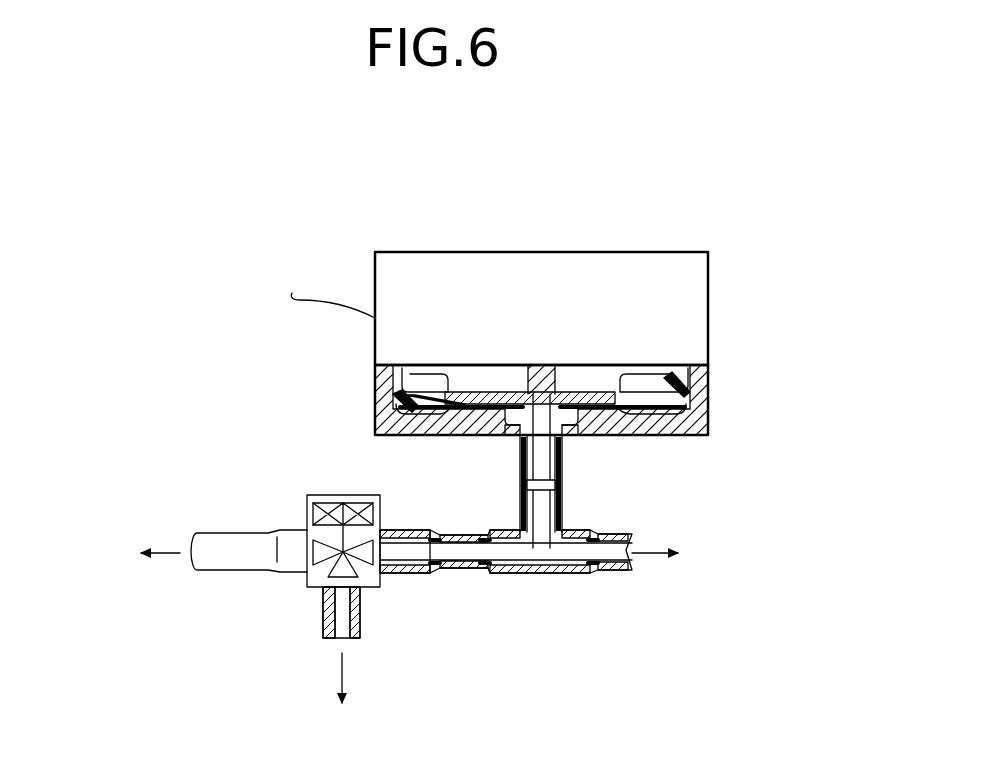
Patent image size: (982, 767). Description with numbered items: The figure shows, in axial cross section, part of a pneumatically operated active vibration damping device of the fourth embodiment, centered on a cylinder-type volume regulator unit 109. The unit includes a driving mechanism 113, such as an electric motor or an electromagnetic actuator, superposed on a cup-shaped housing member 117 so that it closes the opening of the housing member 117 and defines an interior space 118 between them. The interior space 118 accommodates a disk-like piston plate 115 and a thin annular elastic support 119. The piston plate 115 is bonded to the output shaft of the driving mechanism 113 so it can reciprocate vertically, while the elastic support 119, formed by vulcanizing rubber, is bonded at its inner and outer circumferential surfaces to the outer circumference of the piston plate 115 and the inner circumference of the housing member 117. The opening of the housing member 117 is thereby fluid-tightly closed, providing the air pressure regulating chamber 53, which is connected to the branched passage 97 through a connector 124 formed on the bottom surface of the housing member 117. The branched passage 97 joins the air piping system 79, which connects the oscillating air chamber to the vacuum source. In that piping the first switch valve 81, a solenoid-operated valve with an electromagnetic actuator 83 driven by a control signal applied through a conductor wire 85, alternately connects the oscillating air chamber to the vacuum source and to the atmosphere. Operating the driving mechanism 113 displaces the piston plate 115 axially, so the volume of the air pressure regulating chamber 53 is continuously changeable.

The air pressure regulating chamber 53 is at (437, 415).
The air piping system 79 is at (450, 588).
The first switch valve 81 is at (317, 585).
The electromagnetic actuator 83 is at (332, 508).
The conductor wire 85 is at (288, 512).
The branched passage 97 is at (522, 510).
The volume regulator unit 109 is at (554, 355).
The driving mechanism 113 is at (423, 272).
The piston plate 115 is at (587, 398).
The housing member 117 is at (675, 443).
The interior space 118 is at (617, 373).
The elastic support 119 is at (430, 392).
The connector 124 is at (562, 467).